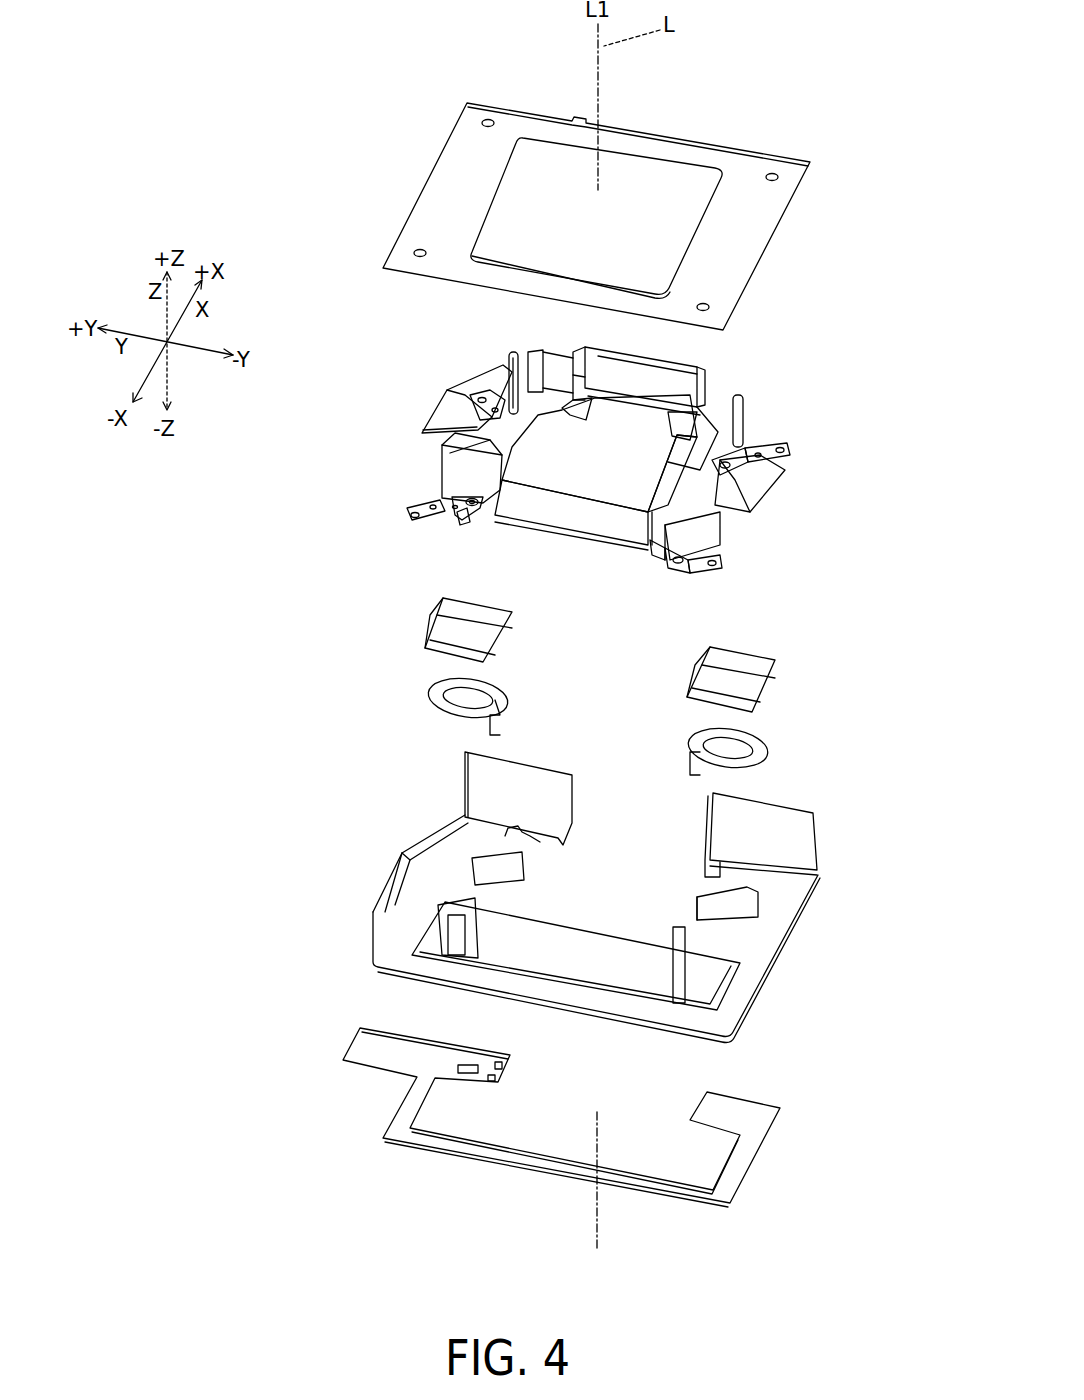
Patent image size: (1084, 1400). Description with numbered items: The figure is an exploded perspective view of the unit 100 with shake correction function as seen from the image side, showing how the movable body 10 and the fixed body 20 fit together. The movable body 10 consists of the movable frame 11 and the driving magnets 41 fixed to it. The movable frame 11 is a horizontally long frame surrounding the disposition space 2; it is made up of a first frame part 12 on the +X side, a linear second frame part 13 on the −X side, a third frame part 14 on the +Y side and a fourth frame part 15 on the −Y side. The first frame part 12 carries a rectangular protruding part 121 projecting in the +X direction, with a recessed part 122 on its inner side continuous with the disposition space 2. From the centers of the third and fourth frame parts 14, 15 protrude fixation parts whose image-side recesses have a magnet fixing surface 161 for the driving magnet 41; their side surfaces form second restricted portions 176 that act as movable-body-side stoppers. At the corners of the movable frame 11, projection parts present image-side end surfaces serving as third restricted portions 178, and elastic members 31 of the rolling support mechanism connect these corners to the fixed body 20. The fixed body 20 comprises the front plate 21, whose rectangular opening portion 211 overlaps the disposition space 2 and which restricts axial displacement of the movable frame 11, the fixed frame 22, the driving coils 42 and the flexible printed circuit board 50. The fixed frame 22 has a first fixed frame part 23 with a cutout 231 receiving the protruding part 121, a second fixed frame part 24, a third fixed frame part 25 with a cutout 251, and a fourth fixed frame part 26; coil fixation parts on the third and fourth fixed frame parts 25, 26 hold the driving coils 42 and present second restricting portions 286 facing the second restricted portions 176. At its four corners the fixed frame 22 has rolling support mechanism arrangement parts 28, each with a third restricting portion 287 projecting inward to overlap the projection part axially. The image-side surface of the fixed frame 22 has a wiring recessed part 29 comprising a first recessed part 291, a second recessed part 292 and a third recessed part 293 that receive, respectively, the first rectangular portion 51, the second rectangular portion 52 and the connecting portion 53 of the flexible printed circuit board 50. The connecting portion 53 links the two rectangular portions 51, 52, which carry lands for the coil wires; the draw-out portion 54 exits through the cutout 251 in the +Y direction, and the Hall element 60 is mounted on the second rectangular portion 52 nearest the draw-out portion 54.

The unit with shake correction function 100 is at (338, 122).
The disposition space 2 is at (635, 471).
The movable body 10 is at (290, 470).
The movable frame 11 is at (405, 430).
The first frame part 12 is at (675, 391).
The protruding part 121 is at (670, 360).
The recessed part 122 is at (595, 407).
The second frame part 13 is at (542, 535).
The third frame part 14 is at (512, 450).
The fourth frame part 15 is at (659, 473).
The magnet fixing surface 161 is at (445, 413).
The second restricted portion 176 is at (463, 477).
The third restricted portion 178 is at (555, 350).
The fixed body 20 is at (885, 1050).
The front plate 21 is at (637, 214).
The opening portion 211 is at (672, 168).
The fixed frame 22 is at (830, 830).
The first fixed frame part 23 is at (760, 790).
The cutout 231 is at (570, 812).
The second fixed frame part 24 is at (616, 973).
The third fixed frame part 25 is at (430, 828).
The cutout 251 is at (392, 886).
The fourth fixed frame part 26 is at (800, 915).
The rolling support mechanism arrangement part 28 is at (470, 928).
The second restricting portion 286 is at (492, 865).
The third restricting portion 287 is at (700, 870).
The wiring recessed part 29 is at (765, 958).
The first recessed part 291 is at (722, 924).
The second recessed part 292 is at (467, 919).
The third recessed part 293 is at (688, 1015).
The elastic member 31 is at (443, 530).
The driving magnet 41 is at (428, 625).
The driving coil 42 is at (507, 698).
The flexible printed circuit board 50 is at (800, 1098).
The first rectangular portion 51 is at (740, 1108).
The second rectangular portion 52 is at (505, 1072).
The connecting portion 53 is at (478, 1153).
The draw-out portion 54 is at (365, 1060).
The Hall element 60 is at (468, 1075).